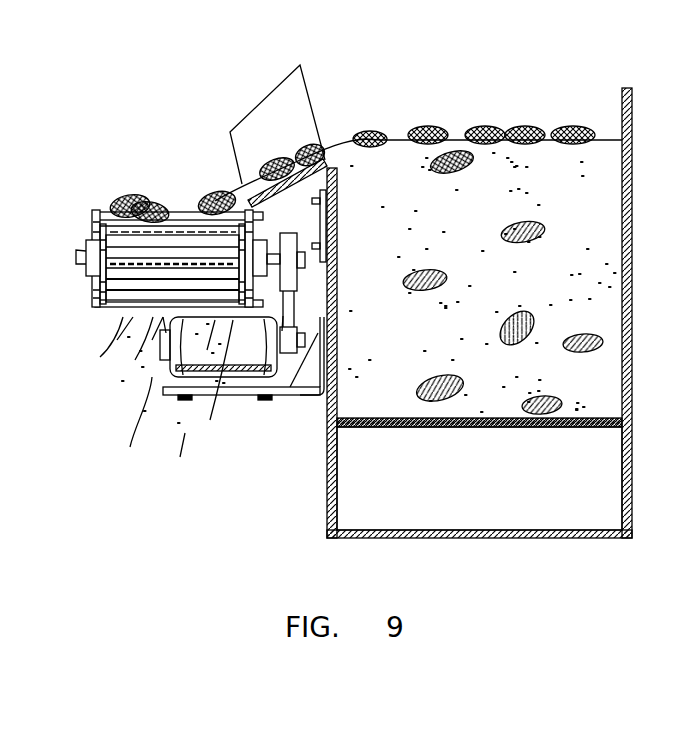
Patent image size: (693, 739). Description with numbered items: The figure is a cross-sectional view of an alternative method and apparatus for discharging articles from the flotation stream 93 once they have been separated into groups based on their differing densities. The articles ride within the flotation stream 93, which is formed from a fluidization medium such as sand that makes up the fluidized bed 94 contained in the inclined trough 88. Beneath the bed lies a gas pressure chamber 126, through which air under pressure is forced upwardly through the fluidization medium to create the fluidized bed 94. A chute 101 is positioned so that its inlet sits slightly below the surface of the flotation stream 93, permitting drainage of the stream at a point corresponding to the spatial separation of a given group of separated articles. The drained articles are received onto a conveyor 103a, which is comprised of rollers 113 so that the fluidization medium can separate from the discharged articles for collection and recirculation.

The inclined trough 88 is at (632, 219).
The flotation stream 93 is at (398, 138).
The fluidized bed 94 is at (600, 305).
The chute 101 is at (262, 138).
The rollers 113 is at (93, 297).
The conveyor 103a is at (120, 327).
The gas pressure chamber 126 is at (497, 483).